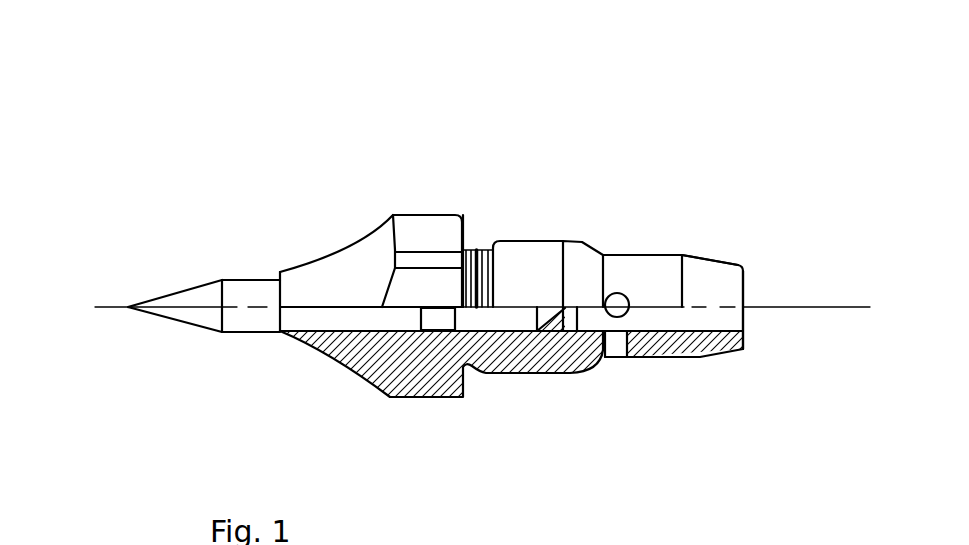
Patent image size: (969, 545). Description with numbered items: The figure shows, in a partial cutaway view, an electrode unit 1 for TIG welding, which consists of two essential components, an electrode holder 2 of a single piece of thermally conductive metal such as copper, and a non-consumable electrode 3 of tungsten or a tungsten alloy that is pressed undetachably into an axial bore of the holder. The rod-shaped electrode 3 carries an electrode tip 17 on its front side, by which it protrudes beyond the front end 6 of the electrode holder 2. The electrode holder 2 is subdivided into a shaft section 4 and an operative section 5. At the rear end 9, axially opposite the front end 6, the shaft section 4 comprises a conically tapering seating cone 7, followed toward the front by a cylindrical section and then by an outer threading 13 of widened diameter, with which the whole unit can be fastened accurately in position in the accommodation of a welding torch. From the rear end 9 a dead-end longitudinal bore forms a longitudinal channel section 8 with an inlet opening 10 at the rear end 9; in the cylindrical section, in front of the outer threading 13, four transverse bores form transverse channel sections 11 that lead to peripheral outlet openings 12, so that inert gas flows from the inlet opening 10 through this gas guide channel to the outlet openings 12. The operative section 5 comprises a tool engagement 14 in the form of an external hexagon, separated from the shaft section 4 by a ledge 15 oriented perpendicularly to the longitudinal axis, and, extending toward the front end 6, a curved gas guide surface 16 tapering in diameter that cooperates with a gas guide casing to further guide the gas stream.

The electrode unit 1 is at (477, 153).
The electrode holder 2 is at (543, 205).
The electrode 3 is at (227, 262).
The shaft section 4 is at (647, 237).
The operative section 5 is at (387, 202).
The front end 6 is at (278, 263).
The seating cone 7 is at (730, 255).
The longitudinal channel section 8 is at (677, 322).
The rear end 9 is at (753, 282).
The inlet opening 10 is at (745, 320).
The transverse channel sections 11 is at (617, 293).
The outlet openings 12 is at (620, 357).
The outer threading 13 is at (525, 375).
The tool engagement 14 is at (425, 230).
The ledge 15 is at (466, 230).
The gas guide surface 16 is at (328, 257).
The electrode tip 17 is at (128, 306).